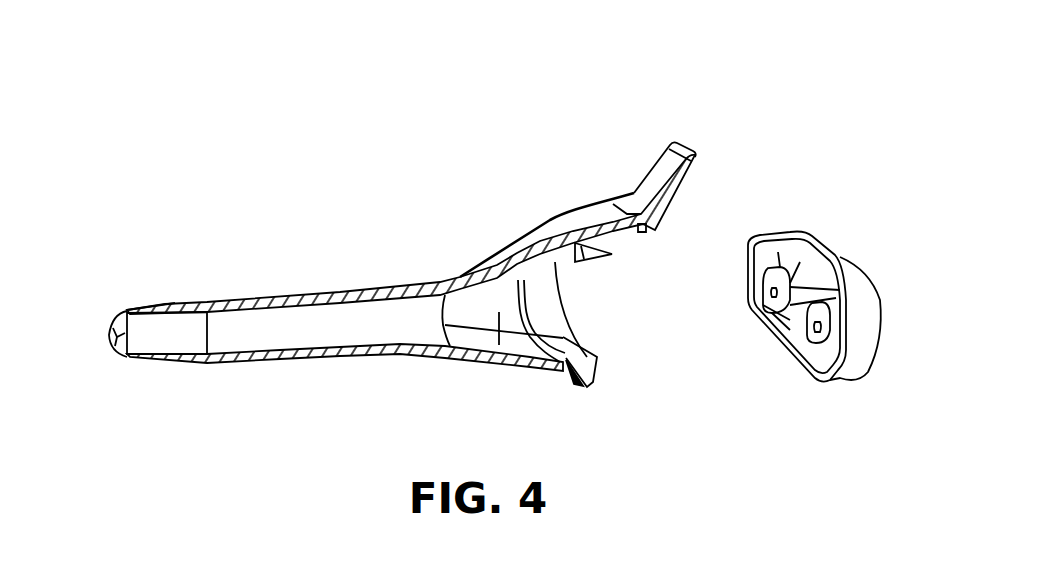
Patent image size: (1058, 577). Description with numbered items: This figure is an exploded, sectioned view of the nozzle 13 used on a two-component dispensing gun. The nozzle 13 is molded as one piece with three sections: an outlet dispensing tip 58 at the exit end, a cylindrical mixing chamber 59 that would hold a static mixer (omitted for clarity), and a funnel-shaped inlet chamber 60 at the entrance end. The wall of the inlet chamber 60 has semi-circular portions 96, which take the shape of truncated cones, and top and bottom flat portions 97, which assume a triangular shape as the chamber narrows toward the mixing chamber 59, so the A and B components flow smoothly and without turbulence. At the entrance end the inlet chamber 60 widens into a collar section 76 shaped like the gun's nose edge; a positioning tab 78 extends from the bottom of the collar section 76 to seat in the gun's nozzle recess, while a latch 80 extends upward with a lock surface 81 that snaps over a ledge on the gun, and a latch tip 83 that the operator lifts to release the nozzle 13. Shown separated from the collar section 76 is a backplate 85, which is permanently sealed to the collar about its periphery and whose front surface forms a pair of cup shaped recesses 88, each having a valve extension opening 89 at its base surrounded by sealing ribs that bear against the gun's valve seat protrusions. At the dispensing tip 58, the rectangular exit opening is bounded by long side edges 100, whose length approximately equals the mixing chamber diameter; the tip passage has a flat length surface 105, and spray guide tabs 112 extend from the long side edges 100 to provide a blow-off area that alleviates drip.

The nozzle 13 is at (331, 277).
The dispensing tip 58 is at (173, 303).
The mixing chamber 59 is at (281, 293).
The inlet chamber 60 is at (536, 232).
The collar section 76 is at (565, 322).
The positioning tab 78 is at (598, 367).
The latch 80 is at (576, 221).
The lock surface 81 is at (645, 231).
The latch tip 83 is at (693, 150).
The backplate 85 is at (836, 250).
The cup shaped recess 88 is at (838, 368).
The valve extension opening 89 is at (841, 287).
The semi-circular portions 96 is at (490, 307).
The top and bottom flat portions 97 is at (494, 266).
The long side edges 100 is at (145, 358).
The length surface of dispensing tip passage 105 is at (170, 336).
The spray guide tabs 112 is at (116, 343).